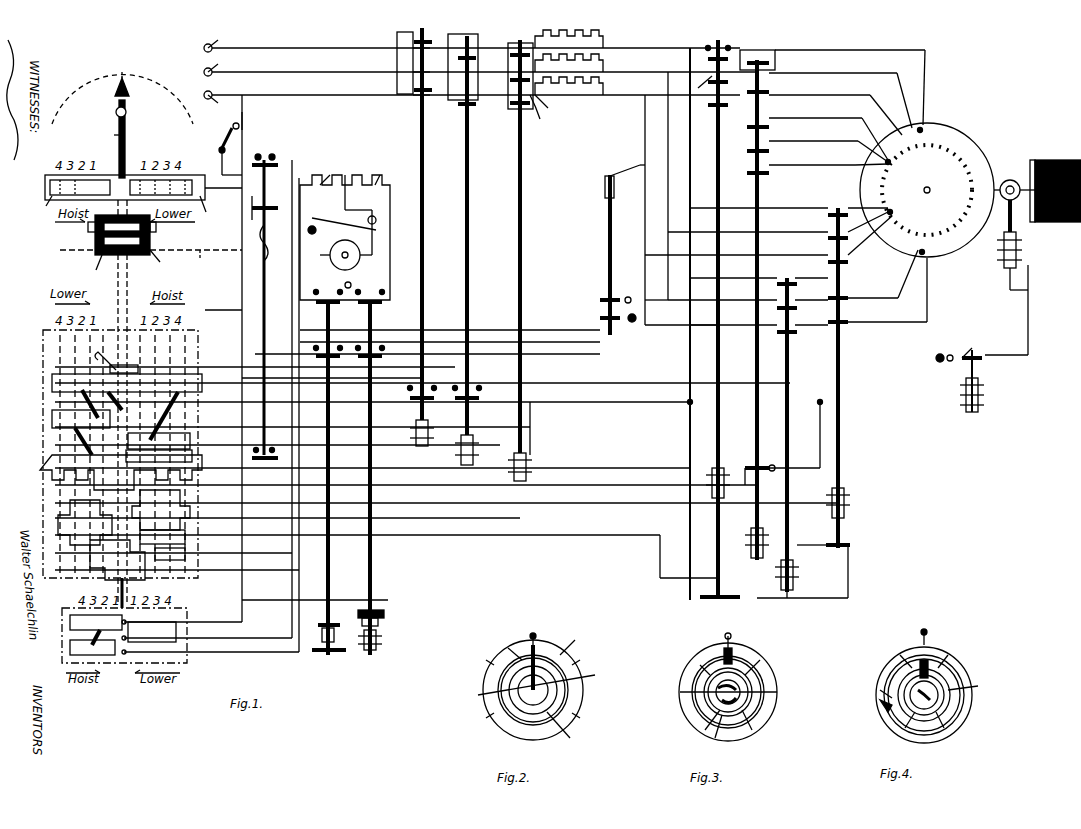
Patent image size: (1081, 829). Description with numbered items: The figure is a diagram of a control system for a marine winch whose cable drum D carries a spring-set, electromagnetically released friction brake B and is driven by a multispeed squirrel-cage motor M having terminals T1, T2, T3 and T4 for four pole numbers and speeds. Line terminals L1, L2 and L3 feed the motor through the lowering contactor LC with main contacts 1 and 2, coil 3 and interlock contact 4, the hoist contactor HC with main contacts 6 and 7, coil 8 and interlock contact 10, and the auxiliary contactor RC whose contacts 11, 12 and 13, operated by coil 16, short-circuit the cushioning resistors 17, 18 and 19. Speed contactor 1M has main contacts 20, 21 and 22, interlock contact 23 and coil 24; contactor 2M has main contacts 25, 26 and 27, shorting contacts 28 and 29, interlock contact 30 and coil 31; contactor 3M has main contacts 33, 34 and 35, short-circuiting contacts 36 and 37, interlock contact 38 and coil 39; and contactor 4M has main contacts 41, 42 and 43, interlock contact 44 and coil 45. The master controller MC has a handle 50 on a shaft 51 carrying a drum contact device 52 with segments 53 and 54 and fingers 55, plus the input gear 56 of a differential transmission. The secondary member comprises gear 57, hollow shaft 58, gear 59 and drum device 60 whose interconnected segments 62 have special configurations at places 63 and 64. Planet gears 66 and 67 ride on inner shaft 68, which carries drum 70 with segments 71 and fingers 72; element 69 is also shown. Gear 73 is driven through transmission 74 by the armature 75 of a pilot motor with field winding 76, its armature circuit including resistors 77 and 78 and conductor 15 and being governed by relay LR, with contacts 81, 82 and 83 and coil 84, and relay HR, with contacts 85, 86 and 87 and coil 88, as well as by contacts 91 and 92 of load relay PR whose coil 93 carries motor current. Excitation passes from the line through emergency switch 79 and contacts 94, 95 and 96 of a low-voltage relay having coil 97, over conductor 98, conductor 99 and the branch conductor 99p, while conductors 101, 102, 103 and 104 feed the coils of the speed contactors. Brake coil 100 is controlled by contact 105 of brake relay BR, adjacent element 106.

The main contact 1 is at (423, 47).
The main contact 2 is at (412, 73).
The coil 3 is at (432, 430).
The interlock contact 4 is at (409, 398).
The main contact 6 is at (463, 66).
The main contact 7 is at (473, 112).
The coil 8 is at (476, 442).
The interlock contact 10 is at (480, 392).
The contact 11 is at (520, 62).
The contact 12 is at (549, 104).
The contact 13 is at (541, 114).
The conductor 15 is at (550, 350).
The coil 16 is at (530, 462).
The resistor 17 is at (569, 32).
The resistor 18 is at (584, 62).
The resistor 19 is at (570, 99).
The main contact 20 is at (729, 44).
The main contact 21 is at (707, 83).
The main contact 22 is at (714, 107).
The interlock contact 23 is at (733, 597).
The coil 24 is at (728, 483).
The main contact 25 is at (778, 127).
The main contact 26 is at (778, 151).
The main contact 27 is at (778, 173).
The shorting contact 28 is at (778, 63).
The shorting contact 29 is at (778, 92).
The interlock contact 30 is at (760, 466).
The coil 31 is at (750, 540).
The main contact 33 is at (827, 216).
The main contact 34 is at (827, 239).
The main contact 35 is at (827, 262).
The short-circuiting contact 36 is at (858, 292).
The short-circuiting contact 37 is at (858, 318).
The interlock contact 38 is at (852, 545).
The coil 39 is at (848, 498).
The main contact 41 is at (782, 272).
The main contact 42 is at (776, 310).
The main contact 43 is at (793, 343).
The interlock contact 44 is at (796, 441).
The coil 45 is at (796, 578).
The manually adjustable element 50 is at (122, 124).
The shaft 51 is at (107, 136).
The contact control device 52 is at (46, 190).
The contact segment 53 is at (35, 209).
The contact segment 54 is at (207, 212).
The contact fingers 55 is at (121, 187).
The input gear 56 is at (164, 228).
The gear 57 is at (81, 260).
The hollow shaft 58 is at (130, 276).
The gear 59 is at (116, 272).
The contact control device 60 is at (52, 428).
The contact segments 62 is at (52, 382).
The contact segment configuration 63 is at (192, 442).
The contact segment configuration 64 is at (52, 465).
The planet gear 66 is at (88, 226).
The planet gear 67 is at (150, 242).
The inner shaft 68 is at (95, 240).
The controller shaft extension 69 is at (130, 598).
The contact control member 70 is at (62, 622).
The contact segments 71 is at (178, 630).
The contact fingers 72 is at (107, 644).
The gear 73 is at (162, 260).
The transmission 74 is at (151, 261).
The armature 75 is at (363, 264).
The field winding 76 is at (345, 237).
The resistor 77 is at (321, 174).
The resistor 78 is at (376, 174).
The emergency switch 79 is at (222, 130).
The contact 81 is at (328, 287).
The contact 82 is at (334, 361).
The contact 83 is at (329, 662).
The coil 84 is at (318, 628).
The contact 85 is at (365, 287).
The contact 86 is at (377, 361).
The contact 87 is at (384, 612).
The coil 88 is at (380, 641).
The contact 91 is at (610, 320).
The contact 92 is at (616, 290).
The coil 93 is at (604, 178).
The contact 94 is at (272, 160).
The contact 95 is at (261, 208).
The contact 96 is at (256, 462).
The coil 97 is at (273, 243).
The conductor 98 is at (242, 592).
The conductor 99 is at (242, 120).
The conductor 99' 99p is at (650, 402).
The coil 100 is at (1020, 256).
The conductor 101 is at (412, 485).
The conductor 102 is at (355, 518).
The conductor 103 is at (445, 503).
The conductor 104 is at (468, 535).
The contact 105 is at (963, 345).
The brake relay resistor 106 is at (980, 398).
The line terminal L1 is at (472, 40).
The line terminal L2 is at (480, 64).
The line terminal L3 is at (472, 106).
The lowering contactor LC is at (432, 224).
The hoist contactor HC is at (478, 235).
The auxiliary contactor RC is at (531, 246).
The load-responsive relay PR is at (594, 255).
The speed control contactor 1M is at (706, 318).
The speed control contactor 2M is at (743, 310).
The speed control contactor 3M is at (852, 378).
The speed control contactor 4M is at (801, 435).
The relay LR is at (339, 477).
The relay HR is at (383, 477).
The brake relay BR is at (993, 381).
The master controller MC is at (89, 402).
The motor M is at (927, 187).
The friction brake B is at (1014, 189).
The cable drum D is at (1040, 163).
The motor terminals T1 is at (914, 137).
The motor terminals T2 is at (900, 164).
The motor terminals T3 is at (901, 212).
The motor terminals T4 is at (919, 247).